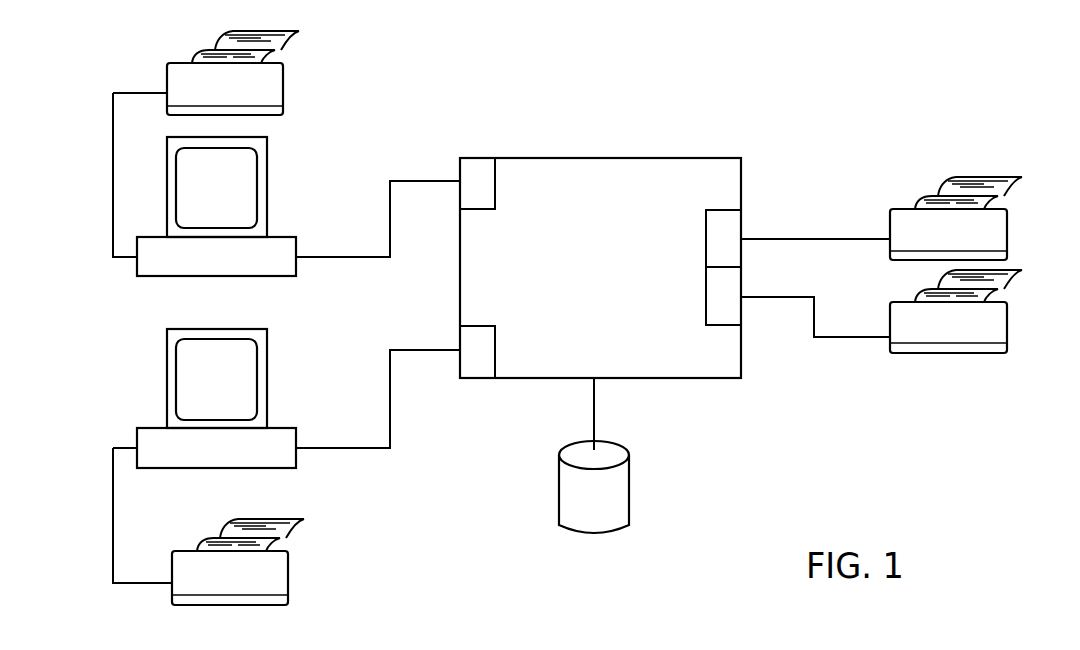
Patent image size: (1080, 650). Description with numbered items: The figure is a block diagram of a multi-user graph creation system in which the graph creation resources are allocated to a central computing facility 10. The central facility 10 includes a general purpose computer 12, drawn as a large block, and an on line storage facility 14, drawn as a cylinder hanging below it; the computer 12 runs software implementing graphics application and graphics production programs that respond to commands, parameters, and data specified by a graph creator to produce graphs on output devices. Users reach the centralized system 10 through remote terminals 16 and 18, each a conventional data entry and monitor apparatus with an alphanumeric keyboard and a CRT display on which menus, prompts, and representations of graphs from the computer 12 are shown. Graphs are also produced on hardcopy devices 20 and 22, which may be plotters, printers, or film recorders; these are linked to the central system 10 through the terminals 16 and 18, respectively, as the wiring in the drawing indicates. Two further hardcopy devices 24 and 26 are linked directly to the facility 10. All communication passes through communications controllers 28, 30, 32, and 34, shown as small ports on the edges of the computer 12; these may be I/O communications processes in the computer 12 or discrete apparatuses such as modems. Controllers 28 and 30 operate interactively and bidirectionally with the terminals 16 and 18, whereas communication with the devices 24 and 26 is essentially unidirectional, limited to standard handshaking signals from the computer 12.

The central computing facility 10 is at (515, 498).
The general purpose computer 12 is at (651, 378).
The on line storage facility 14 is at (630, 503).
The terminal 16 is at (283, 237).
The terminal 18 is at (280, 428).
The hardcopy device 20 is at (277, 97).
The hardcopy device 22 is at (288, 578).
The hardcopy device 24 is at (1000, 235).
The hardcopy device 26 is at (1005, 335).
The communications controller 28 is at (483, 158).
The communications controller 30 is at (477, 378).
The communications controller 32 is at (741, 226).
The communications controller 34 is at (741, 290).